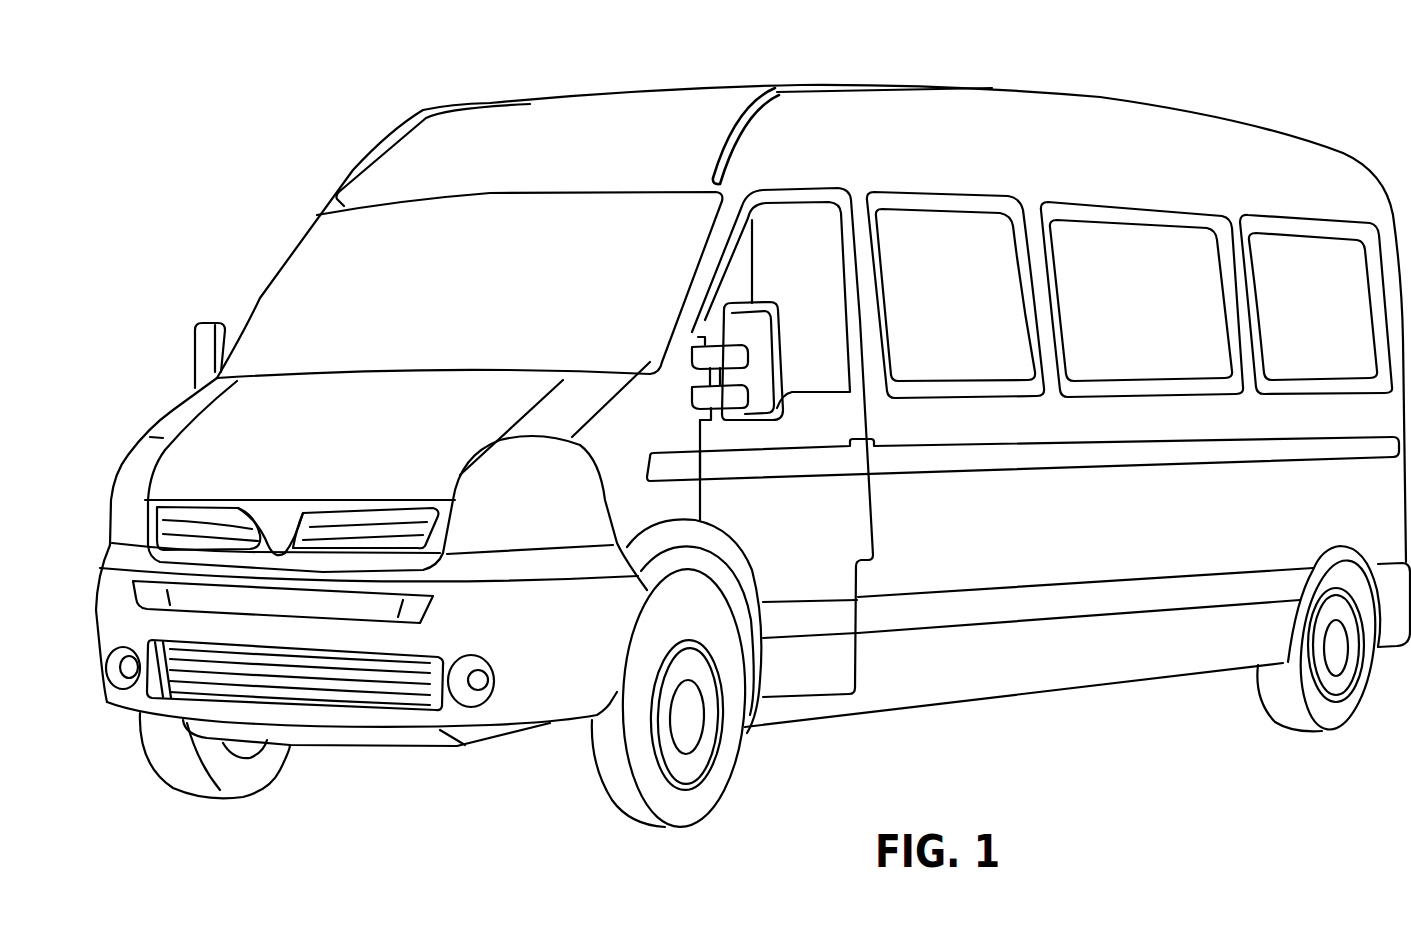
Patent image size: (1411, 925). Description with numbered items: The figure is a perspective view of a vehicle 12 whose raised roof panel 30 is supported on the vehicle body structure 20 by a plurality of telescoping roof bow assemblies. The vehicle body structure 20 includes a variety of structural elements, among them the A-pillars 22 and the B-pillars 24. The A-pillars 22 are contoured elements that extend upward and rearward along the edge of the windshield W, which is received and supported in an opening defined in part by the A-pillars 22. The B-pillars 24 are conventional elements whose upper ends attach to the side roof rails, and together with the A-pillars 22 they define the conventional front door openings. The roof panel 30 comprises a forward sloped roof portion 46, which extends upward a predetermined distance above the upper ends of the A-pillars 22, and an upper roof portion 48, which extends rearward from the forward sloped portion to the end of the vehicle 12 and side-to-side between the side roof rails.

The vehicle 12 is at (852, 58).
The vehicle body structure 20 is at (462, 76).
The A-pillars 22 is at (706, 267).
The B-pillars 24 is at (872, 274).
The roof panel 30 is at (668, 88).
The forward sloped roof portion 46 is at (556, 134).
The upper roof portion 48 is at (987, 86).
The windshield W is at (331, 285).